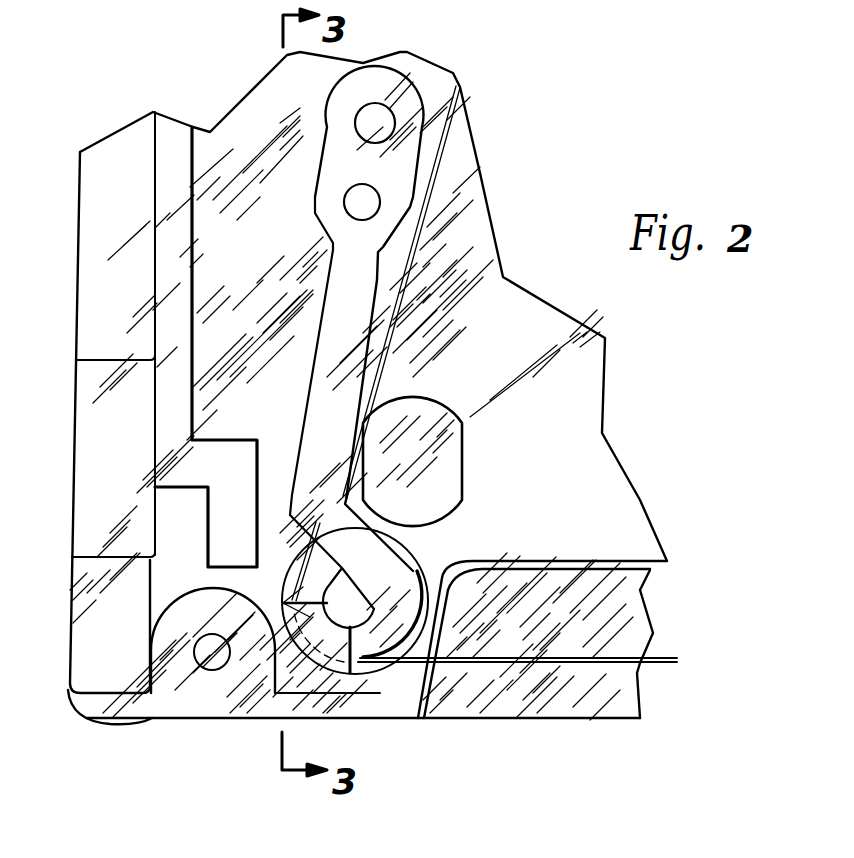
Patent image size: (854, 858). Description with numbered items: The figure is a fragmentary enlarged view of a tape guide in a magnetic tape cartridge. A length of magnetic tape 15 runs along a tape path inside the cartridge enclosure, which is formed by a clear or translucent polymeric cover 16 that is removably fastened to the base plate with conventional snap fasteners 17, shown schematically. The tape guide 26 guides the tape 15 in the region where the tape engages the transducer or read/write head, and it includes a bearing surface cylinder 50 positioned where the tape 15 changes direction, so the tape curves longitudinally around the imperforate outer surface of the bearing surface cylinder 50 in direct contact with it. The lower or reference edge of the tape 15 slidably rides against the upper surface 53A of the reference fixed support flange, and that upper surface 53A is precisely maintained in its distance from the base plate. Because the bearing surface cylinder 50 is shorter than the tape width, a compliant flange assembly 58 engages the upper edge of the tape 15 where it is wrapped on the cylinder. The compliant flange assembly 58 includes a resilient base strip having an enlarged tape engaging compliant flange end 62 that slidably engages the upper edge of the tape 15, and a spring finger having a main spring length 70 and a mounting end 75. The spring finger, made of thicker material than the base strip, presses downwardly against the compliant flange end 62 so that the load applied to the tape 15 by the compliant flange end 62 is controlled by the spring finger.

The magnetic tape 15 is at (510, 663).
The cover 16 is at (577, 405).
The snap fasteners 17 is at (448, 465).
The tape guide 26 is at (378, 688).
The bearing surface cylinder 50 is at (437, 567).
The upper surface of reference fixed support flange 53A is at (420, 615).
The compliant flange assembly 58 is at (358, 390).
The compliant flange end 62 is at (283, 603).
The main spring length 70 is at (323, 427).
The mounting end 75 is at (403, 166).